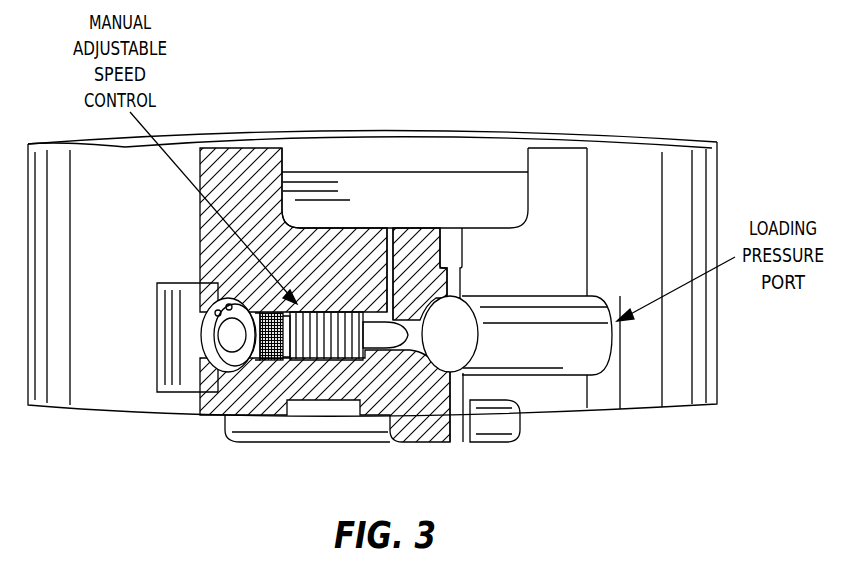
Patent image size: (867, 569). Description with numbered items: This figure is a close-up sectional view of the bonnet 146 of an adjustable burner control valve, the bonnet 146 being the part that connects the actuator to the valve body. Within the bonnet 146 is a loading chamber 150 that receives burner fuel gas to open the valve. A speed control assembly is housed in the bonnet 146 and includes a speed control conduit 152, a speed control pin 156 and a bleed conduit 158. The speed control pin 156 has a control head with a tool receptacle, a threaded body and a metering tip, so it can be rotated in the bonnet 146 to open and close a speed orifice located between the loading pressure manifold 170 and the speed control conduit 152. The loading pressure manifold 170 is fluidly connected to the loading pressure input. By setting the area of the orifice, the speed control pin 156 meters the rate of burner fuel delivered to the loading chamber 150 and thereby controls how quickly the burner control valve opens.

The bonnet 146 is at (648, 358).
The loading chamber 150 is at (402, 165).
The speed control conduit 152 is at (387, 273).
The speed control pin 156 is at (296, 347).
The bleed conduit 158 is at (452, 292).
The loading pressure manifold 170 is at (512, 345).